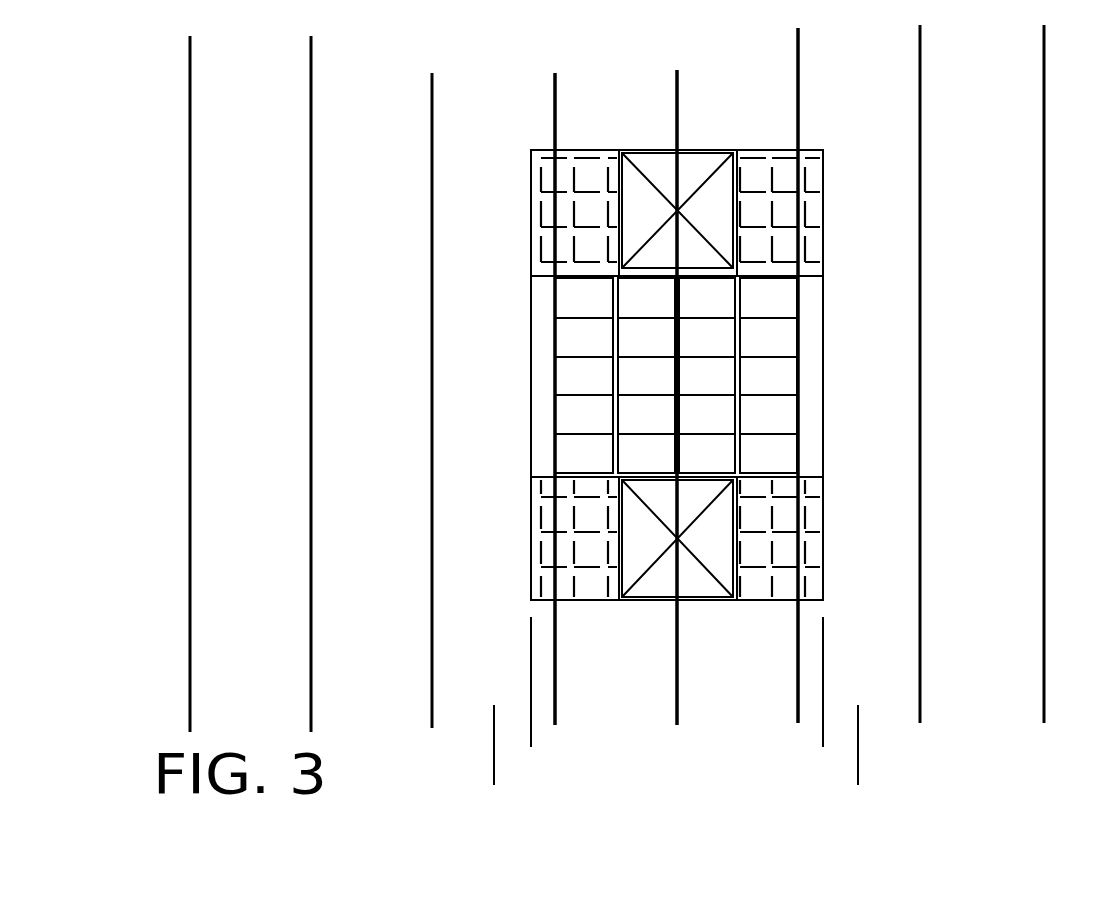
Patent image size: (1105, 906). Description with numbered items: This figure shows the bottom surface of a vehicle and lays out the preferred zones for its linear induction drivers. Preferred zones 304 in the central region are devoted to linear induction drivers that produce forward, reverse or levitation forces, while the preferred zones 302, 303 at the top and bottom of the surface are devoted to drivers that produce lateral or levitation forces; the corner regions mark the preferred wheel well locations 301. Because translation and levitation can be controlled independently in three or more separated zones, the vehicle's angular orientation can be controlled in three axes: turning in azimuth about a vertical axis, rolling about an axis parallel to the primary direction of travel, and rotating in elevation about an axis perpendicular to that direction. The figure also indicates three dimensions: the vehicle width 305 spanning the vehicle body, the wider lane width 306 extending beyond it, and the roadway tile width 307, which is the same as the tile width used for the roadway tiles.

The preferred wheel well locations 301 is at (537, 152).
The preferred zone for linear induction drivers producing lateral or levitation forc 302 is at (683, 170).
The preferred zone for linear induction drivers producing lateral or levitation forc 303 is at (692, 583).
The preferred zones for linear induction drivers producing forward, reverse or levit 304 is at (772, 306).
The vehicle width 305 is at (823, 737).
The lane width 306 is at (858, 778).
The roadway tile width 307 is at (1023, 577).